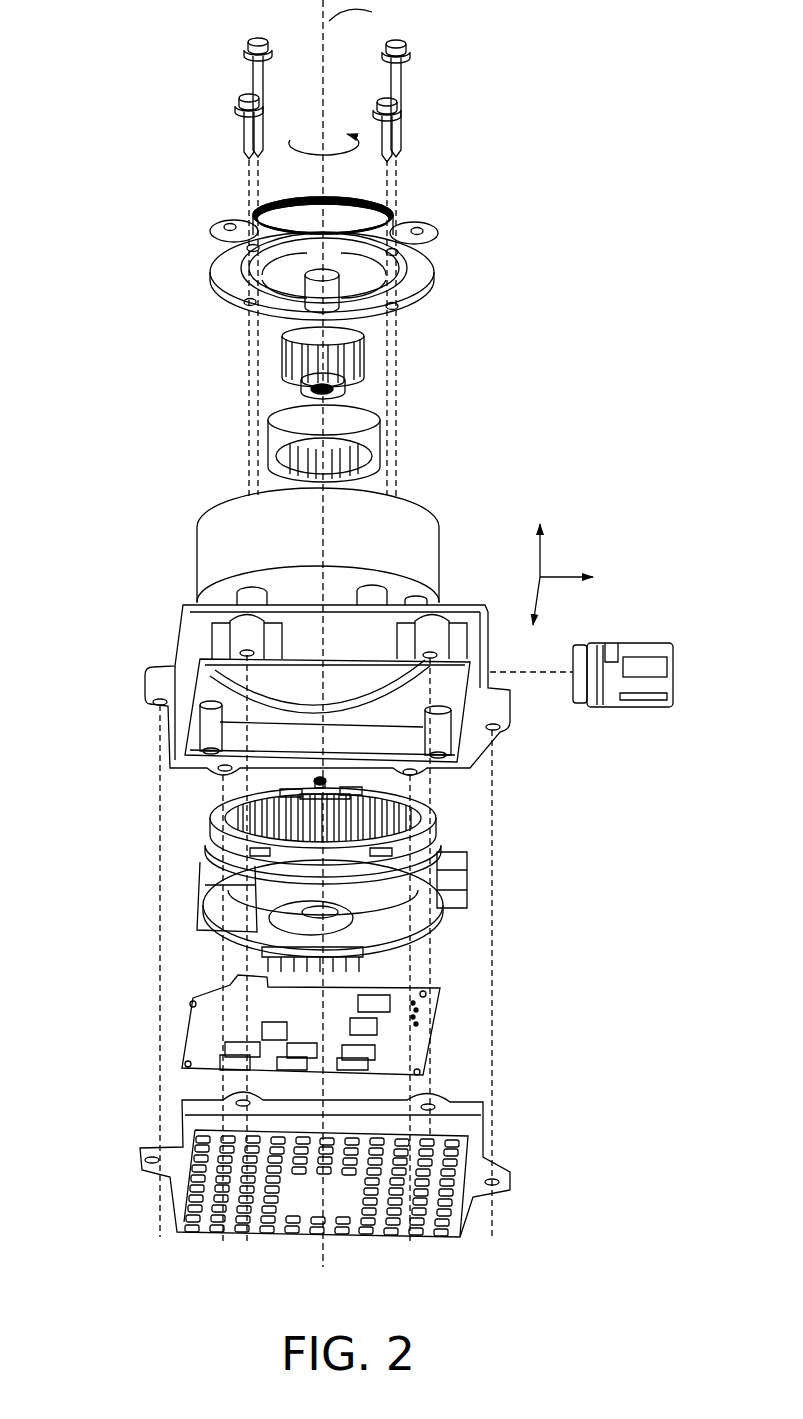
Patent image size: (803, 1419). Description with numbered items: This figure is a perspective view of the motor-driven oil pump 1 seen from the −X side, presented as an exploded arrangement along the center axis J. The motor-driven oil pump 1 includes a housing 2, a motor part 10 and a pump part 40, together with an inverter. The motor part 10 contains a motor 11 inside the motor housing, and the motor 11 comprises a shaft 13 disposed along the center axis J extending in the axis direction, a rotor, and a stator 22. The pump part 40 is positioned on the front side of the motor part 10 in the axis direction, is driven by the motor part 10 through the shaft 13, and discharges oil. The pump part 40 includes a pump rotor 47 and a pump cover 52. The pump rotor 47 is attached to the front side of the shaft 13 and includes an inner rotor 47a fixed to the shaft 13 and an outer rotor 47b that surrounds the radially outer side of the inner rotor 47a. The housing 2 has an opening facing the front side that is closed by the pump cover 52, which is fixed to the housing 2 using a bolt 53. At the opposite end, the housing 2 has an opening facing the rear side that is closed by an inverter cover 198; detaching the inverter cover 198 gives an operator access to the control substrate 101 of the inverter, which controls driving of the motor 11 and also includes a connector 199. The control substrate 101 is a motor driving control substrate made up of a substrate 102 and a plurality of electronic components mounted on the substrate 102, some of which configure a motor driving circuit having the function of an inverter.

The motor-driven oil pump 1 is at (578, 74).
The housing 2 is at (420, 510).
The motor part 10 is at (82, 918).
The motor 11 is at (478, 829).
The shaft 13 is at (324, 780).
The stator 22 is at (210, 835).
The pump part 40 is at (132, 33).
The pump rotor 47 is at (395, 404).
The inner rotor 47a is at (365, 362).
The outer rotor 47b is at (372, 434).
The pump cover 52 is at (423, 233).
The bolt 53 is at (250, 40).
The control substrate 101 is at (185, 1005).
The substrate 102 is at (183, 1047).
The inverter cover 198 is at (147, 1145).
The connector 199 is at (639, 704).